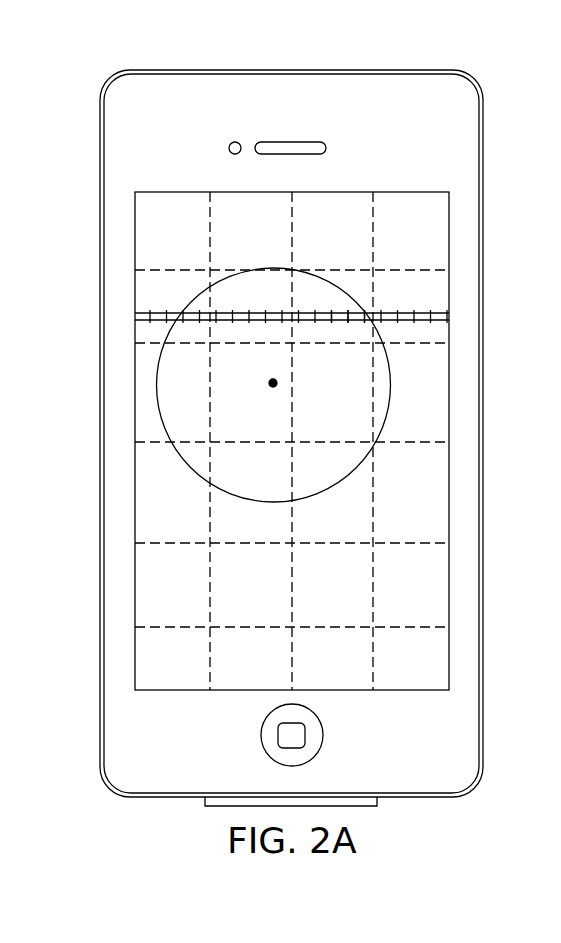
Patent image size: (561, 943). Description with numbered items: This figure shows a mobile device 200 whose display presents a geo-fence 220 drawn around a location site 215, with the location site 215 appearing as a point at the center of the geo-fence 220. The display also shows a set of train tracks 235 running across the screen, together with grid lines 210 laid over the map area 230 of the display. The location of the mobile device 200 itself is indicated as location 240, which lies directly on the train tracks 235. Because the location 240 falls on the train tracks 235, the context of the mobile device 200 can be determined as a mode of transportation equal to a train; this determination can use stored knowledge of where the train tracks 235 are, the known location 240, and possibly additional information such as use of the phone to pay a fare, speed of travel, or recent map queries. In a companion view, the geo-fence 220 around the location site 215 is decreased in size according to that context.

The mobile device 200 is at (258, 70).
The grid lines 210 is at (209, 690).
The location site 215 is at (273, 383).
The geo-fence 220 is at (392, 372).
The display screen 230 is at (415, 492).
The train tracks 235 is at (200, 310).
The location 240 is at (352, 315).